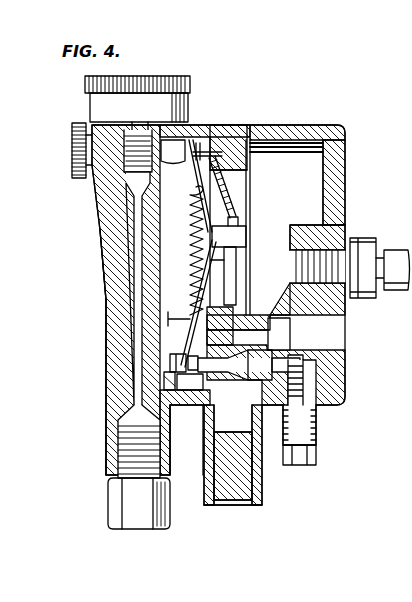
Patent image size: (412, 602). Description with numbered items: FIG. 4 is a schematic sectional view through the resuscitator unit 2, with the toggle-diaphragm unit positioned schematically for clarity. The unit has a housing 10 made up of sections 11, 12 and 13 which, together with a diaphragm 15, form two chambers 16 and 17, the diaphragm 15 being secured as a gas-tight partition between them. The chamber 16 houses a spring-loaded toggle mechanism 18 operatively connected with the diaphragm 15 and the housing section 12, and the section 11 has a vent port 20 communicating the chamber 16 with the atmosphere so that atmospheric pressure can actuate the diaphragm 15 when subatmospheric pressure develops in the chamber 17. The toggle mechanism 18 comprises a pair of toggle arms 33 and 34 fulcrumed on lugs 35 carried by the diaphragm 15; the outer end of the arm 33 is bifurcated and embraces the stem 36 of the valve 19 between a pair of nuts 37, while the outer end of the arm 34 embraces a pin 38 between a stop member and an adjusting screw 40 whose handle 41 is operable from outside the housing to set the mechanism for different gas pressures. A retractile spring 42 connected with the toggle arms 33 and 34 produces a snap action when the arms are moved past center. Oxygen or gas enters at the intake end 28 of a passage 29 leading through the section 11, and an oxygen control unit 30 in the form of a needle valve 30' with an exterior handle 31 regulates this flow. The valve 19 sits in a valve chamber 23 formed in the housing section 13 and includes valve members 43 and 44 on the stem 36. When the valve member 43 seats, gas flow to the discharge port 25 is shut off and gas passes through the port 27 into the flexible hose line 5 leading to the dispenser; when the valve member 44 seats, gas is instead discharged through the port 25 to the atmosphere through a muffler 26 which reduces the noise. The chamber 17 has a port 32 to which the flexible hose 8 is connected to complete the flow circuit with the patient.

The resuscitator unit 2 is at (268, 60).
The flexible hose line 5 is at (291, 465).
The flexible hose 8 is at (391, 248).
The housing 10 is at (100, 240).
The housing section 11 is at (108, 283).
The housing section 12 is at (226, 126).
The housing section 13 is at (345, 330).
The diaphragm 15 is at (222, 296).
The chamber 16 is at (186, 268).
The chamber 17 is at (284, 227).
The toggle mechanism 18 is at (108, 258).
The valve 19 is at (278, 355).
The vent port 20 is at (186, 440).
The valve chamber 23 is at (300, 397).
The discharge port 25 is at (233, 455).
The muffler 26 is at (230, 500).
The port 27 is at (305, 373).
The intake end 28 is at (118, 423).
The passage 29 is at (180, 318).
The oxygen control unit 30 is at (108, 105).
The needle valve 30' is at (99, 166).
The handle 31 is at (185, 78).
The port 32 is at (292, 264).
The toggle arm 33 is at (180, 337).
The toggle arm 34 is at (186, 186).
The lugs 35 is at (228, 238).
The stem 36 is at (172, 355).
The nuts 37 is at (193, 372).
The pin 38 is at (211, 138).
The adjusting screw 40 is at (137, 115).
The handle 41 is at (72, 143).
The retractile spring 42 is at (135, 215).
The valve member 43 is at (223, 318).
The valve member 44 is at (300, 362).